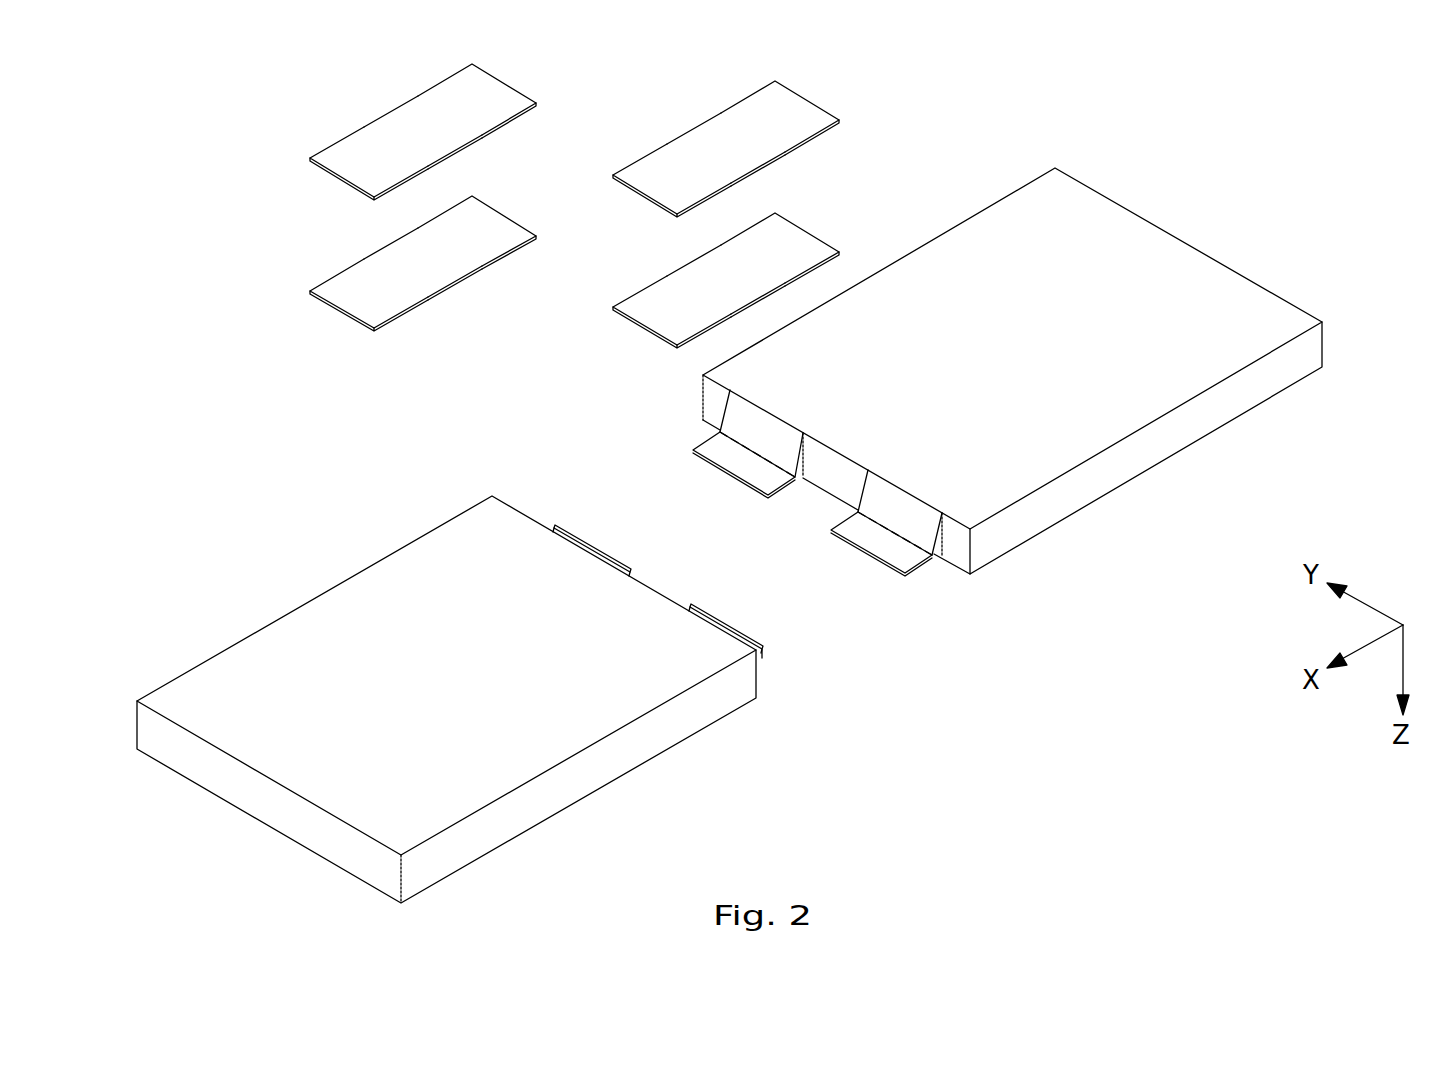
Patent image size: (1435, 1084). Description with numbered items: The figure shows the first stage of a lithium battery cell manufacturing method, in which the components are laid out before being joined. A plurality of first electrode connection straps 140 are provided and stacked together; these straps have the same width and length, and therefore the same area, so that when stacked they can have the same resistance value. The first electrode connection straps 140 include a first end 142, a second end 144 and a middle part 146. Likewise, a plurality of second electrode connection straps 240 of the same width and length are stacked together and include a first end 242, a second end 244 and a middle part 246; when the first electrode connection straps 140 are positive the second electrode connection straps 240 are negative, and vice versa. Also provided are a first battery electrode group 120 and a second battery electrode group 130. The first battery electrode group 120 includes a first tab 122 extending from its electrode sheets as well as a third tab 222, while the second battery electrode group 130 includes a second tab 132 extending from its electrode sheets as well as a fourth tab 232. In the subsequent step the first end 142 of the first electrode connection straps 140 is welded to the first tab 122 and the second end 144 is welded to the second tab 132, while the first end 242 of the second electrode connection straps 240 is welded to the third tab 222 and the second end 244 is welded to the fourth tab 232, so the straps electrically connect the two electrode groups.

The first battery electrode group 120 is at (1195, 268).
The first tab 122 is at (911, 555).
The second battery electrode group 130 is at (213, 697).
The second tab 132 is at (765, 648).
The first electrode connection straps 140 is at (898, 98).
The first end 142 is at (803, 238).
The second end 144 is at (637, 193).
The middle part 146 is at (709, 272).
The third tab 222 is at (712, 447).
The fourth tab 232 is at (560, 530).
The second electrode connection straps 240 is at (260, 207).
The first end 242 is at (498, 222).
The second end 244 is at (334, 178).
The middle part 246 is at (405, 256).